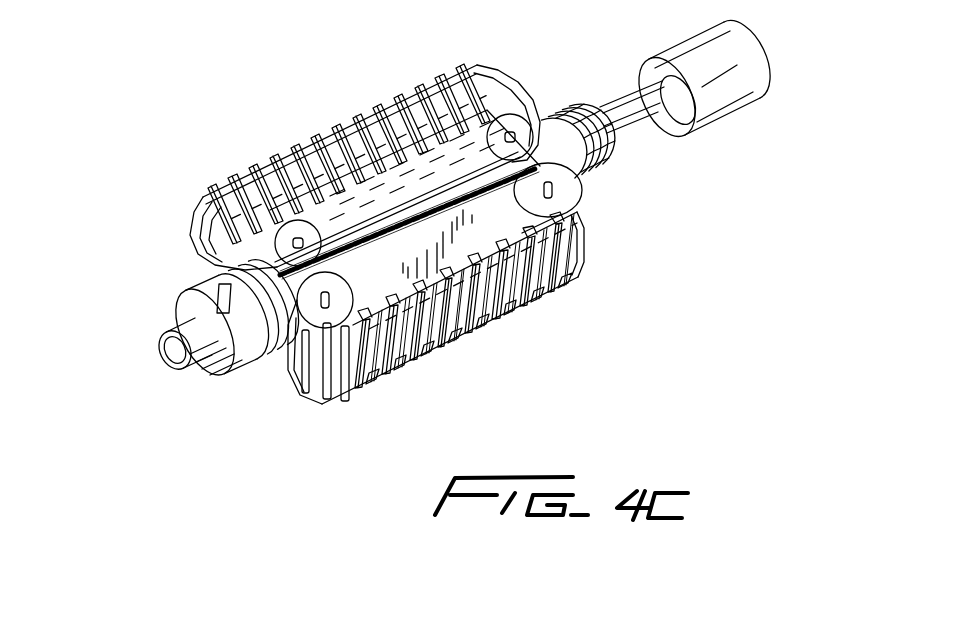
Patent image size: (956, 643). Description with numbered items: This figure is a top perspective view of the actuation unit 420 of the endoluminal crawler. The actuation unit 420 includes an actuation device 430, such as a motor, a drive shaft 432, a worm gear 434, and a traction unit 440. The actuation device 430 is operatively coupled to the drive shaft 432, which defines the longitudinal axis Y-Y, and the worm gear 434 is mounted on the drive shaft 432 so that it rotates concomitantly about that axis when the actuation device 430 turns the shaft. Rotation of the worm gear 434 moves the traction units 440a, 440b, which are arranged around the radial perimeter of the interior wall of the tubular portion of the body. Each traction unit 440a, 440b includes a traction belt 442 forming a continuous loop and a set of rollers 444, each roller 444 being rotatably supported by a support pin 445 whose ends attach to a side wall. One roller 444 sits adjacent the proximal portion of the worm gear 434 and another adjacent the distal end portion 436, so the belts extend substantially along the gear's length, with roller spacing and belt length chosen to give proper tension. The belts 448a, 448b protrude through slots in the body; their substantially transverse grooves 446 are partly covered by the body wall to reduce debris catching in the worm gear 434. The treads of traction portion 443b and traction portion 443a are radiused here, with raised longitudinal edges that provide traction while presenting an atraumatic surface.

The actuation unit 420 is at (522, 348).
The actuation device 430 is at (718, 102).
The drive shaft 432 is at (637, 123).
The worm gear 434 is at (563, 107).
The distal end portion of worm gear 436 is at (205, 373).
The traction unit 440 is at (317, 408).
The traction unit 440a is at (212, 183).
The traction unit 440b is at (552, 300).
The traction belt 442 is at (427, 68).
The traction portion 443a is at (540, 242).
The traction portion 443b is at (325, 140).
The roller 444 is at (340, 405).
The support pin 445 is at (380, 373).
The transverse grooves 446 is at (460, 72).
The traction belt 448a is at (377, 130).
The traction belt 448b is at (477, 333).